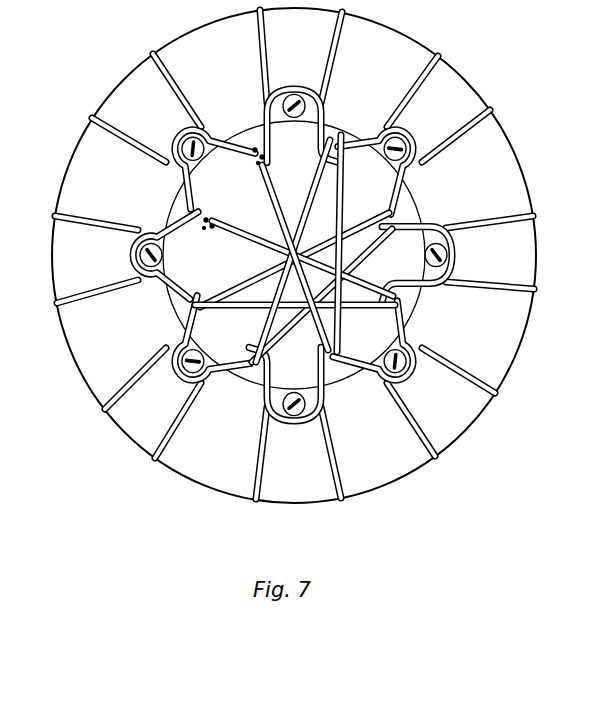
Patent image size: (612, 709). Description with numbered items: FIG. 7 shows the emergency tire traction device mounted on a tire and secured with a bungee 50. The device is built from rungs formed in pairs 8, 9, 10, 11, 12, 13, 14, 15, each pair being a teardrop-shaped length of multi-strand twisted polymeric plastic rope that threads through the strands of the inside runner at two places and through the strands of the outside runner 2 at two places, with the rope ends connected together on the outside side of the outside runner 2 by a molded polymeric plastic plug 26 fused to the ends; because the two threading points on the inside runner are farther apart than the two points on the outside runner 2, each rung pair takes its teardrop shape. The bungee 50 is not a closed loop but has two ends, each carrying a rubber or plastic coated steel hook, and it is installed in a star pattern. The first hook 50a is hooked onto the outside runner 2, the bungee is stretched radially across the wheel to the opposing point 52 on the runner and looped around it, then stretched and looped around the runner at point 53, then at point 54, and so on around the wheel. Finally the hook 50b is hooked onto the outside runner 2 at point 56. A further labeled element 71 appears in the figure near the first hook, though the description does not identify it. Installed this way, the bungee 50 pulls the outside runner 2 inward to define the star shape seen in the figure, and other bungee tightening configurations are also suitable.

The outside runner 2 is at (155, 292).
The rung pair 8 is at (175, 58).
The rung pair 9 is at (357, 33).
The rung pair 10 is at (490, 128).
The rung pair 11 is at (520, 302).
The rung pair 12 is at (406, 452).
The rung pair 13 is at (242, 483).
The rung pair 14 is at (105, 384).
The rung pair 15 is at (69, 204).
The molded polymeric plastic plug 26 is at (430, 253).
The bungee 50 is at (235, 235).
The first hook 50a is at (255, 147).
The hook 50b is at (200, 217).
The opposing point 52 is at (347, 343).
The point 53 is at (353, 163).
The point 54 is at (277, 362).
The point 56 is at (220, 200).
The rod 71 is at (280, 148).